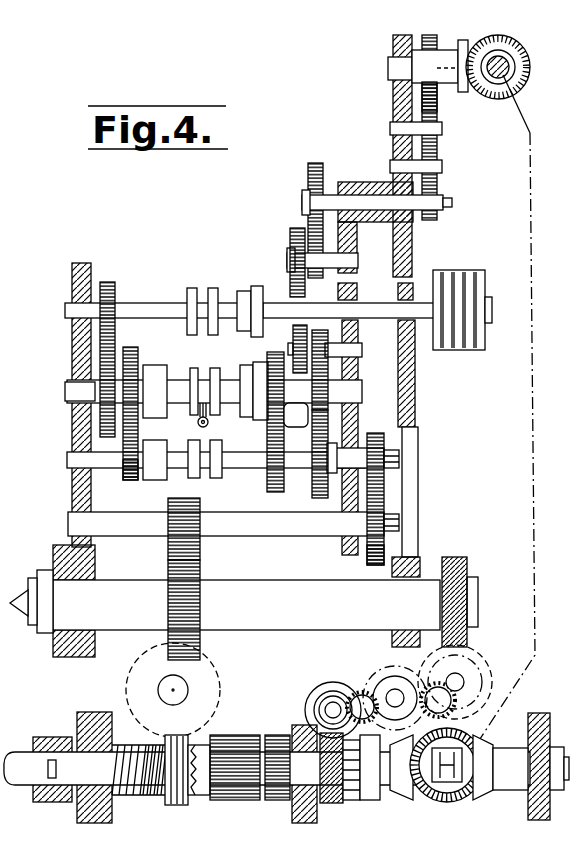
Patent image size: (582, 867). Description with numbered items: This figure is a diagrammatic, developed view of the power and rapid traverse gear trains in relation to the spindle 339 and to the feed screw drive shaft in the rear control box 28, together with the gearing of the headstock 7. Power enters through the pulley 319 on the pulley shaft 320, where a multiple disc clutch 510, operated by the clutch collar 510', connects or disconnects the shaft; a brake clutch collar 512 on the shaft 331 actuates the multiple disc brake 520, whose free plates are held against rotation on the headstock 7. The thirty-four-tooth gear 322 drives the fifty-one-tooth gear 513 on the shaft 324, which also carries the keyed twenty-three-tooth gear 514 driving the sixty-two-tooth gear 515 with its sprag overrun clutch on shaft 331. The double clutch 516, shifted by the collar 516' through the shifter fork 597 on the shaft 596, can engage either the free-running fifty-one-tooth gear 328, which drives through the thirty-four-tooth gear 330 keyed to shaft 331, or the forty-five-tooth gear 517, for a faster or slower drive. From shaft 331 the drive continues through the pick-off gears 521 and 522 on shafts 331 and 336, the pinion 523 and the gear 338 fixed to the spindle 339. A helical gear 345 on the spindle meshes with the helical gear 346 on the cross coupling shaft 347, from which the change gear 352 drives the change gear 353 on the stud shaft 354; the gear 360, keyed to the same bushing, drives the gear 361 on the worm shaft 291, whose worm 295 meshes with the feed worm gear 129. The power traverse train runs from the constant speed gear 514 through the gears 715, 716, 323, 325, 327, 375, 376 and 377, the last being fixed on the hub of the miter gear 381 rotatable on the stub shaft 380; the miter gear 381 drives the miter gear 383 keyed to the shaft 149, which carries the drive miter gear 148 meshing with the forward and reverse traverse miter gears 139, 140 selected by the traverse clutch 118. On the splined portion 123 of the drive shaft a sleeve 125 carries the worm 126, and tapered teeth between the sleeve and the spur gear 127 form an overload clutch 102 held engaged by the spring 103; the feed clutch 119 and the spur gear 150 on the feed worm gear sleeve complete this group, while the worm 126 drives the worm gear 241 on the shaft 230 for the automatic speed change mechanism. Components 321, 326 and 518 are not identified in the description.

The headstock 7 is at (72, 492).
The control box 28 is at (85, 712).
The overload or disconnect clutch 102 is at (200, 798).
The spring 103 is at (118, 796).
The traverse clutch 118 is at (447, 802).
The feed clutch 119 is at (365, 800).
The splined portion of the drive shaft 123 is at (72, 795).
The sleeve 125 is at (148, 795).
The worm 126 is at (168, 805).
The spur gear 127 is at (238, 800).
The feed worm gear 129 is at (330, 803).
The forward traverse miter gear 139 is at (398, 800).
The reverse traverse miter gear 140 is at (490, 793).
The drive miter gear 148 is at (478, 798).
The shaft 149 is at (510, 82).
The spur gear 150 is at (282, 722).
The shaft 230 is at (158, 690).
The worm gear 241 is at (218, 684).
The worm shaft 291 is at (318, 700).
The worm 295 is at (305, 705).
The pulley 319 is at (470, 352).
The pulley shaft 320 is at (172, 318).
The shaft bearing 321 is at (398, 297).
The thirty-four-tooth gear 322 is at (112, 283).
The gear 323 is at (290, 236).
The shaft 324 is at (332, 394).
The gear 325 is at (308, 181).
The shaft 326 is at (322, 202).
The gear 327 is at (438, 210).
The fifty-one-tooth gear 328 is at (138, 340).
The thirty-four-tooth gear 330 is at (130, 480).
The shaft 331 is at (106, 470).
The shaft 336 is at (277, 530).
The gear 338 is at (200, 604).
The spindle 339 is at (268, 625).
The helical gear 345 is at (466, 562).
The helical gear 346 is at (475, 652).
The cross coupling shaft 347 is at (464, 678).
The change gear 352 is at (418, 668).
The second change gear 353 is at (440, 704).
The stud shaft 354 is at (395, 707).
The second gear 360 is at (372, 672).
The gear 361 is at (356, 690).
The gear 375 is at (443, 170).
The gear 376 is at (442, 136).
The gear 377 is at (437, 100).
The stub shaft 380 is at (440, 82).
The miter gear 381 is at (466, 94).
The miter gear 383 is at (530, 62).
The multiple disc clutch 510 is at (195, 295).
The clutch collar 510' is at (241, 296).
The brake clutch collar 512 is at (218, 478).
The fifty-one-tooth gear 513 is at (98, 374).
The twenty-three-tooth gear 514 is at (297, 415).
The sixty-two-tooth gear 515 is at (322, 436).
The multiple disc double clutch 516 is at (198, 380).
The clutch collar 516' is at (200, 378).
The forty-five-tooth gear 517 is at (263, 362).
The gear 518 is at (268, 492).
The brake 520 is at (158, 470).
The pick-off gear 521 is at (375, 433).
The pick-off gear 522 is at (368, 560).
The pinion 523 is at (200, 520).
The shaft 596 is at (198, 422).
The shifter fork 597 is at (212, 420).
The gear 715 is at (330, 347).
The gear 716 is at (293, 334).